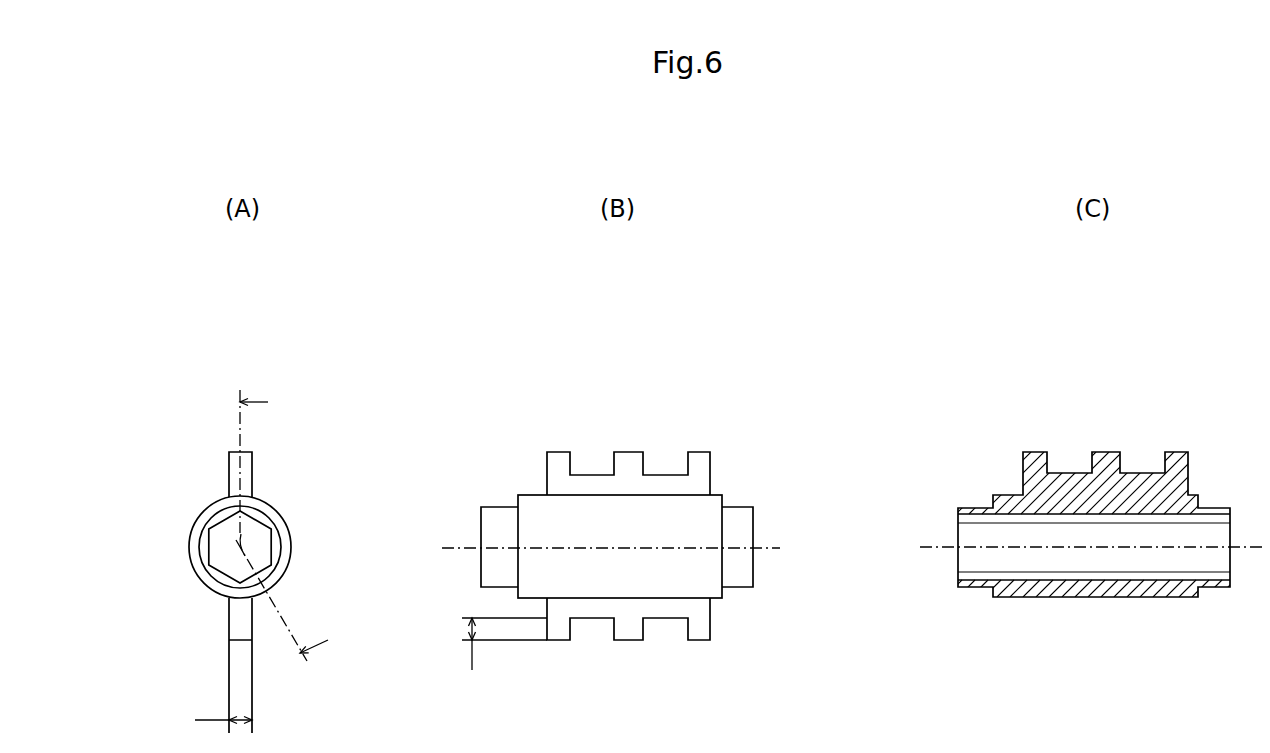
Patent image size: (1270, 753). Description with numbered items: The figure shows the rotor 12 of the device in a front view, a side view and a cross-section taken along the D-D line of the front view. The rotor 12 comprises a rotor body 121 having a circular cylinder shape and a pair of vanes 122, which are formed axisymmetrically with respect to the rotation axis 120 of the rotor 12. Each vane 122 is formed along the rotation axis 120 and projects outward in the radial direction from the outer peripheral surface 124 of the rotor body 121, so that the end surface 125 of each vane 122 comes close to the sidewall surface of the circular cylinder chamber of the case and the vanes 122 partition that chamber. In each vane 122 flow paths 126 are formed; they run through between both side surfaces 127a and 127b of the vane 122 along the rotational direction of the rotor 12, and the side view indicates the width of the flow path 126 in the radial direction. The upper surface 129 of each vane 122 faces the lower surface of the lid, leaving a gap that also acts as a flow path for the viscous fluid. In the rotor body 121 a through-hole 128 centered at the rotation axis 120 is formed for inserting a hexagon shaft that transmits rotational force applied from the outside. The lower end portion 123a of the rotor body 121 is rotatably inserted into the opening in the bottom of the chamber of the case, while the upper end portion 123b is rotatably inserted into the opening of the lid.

The rotor 12 is at (822, 261).
The rotation axis 120 is at (782, 548).
The rotor body 121 is at (300, 575).
The vane 122 is at (252, 467).
The lower end portion 123a is at (745, 588).
The upper end portion 123b is at (502, 507).
The outer peripheral surface 124 is at (195, 524).
The end surface 125 is at (233, 453).
The flow path 126 is at (590, 462).
The side surface 127a is at (252, 488).
The side surface 127b is at (232, 452).
The through-hole 128 is at (262, 543).
The upper surface 129 is at (547, 457).